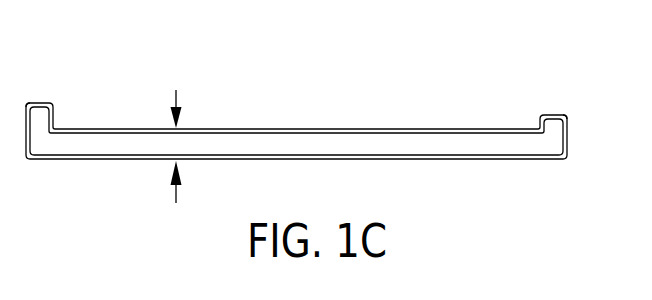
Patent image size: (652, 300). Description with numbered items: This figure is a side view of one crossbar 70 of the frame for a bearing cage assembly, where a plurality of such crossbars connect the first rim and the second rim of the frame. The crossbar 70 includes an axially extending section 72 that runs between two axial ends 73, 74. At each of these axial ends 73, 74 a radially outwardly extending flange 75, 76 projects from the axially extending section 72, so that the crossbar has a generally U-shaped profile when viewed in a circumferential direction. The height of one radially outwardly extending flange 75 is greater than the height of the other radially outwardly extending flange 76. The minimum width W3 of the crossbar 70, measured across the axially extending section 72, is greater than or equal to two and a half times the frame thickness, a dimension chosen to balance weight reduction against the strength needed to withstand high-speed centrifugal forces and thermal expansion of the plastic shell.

The crossbar 70 is at (241, 113).
The axially extending section 72 is at (386, 146).
The axial end 73 is at (40, 144).
The axial end 74 is at (567, 150).
The radially outwardly extending flange 75 is at (40, 102).
The radially outwardly extending flange 76 is at (545, 114).
The minimum width of the crossbars W3 is at (175, 90).